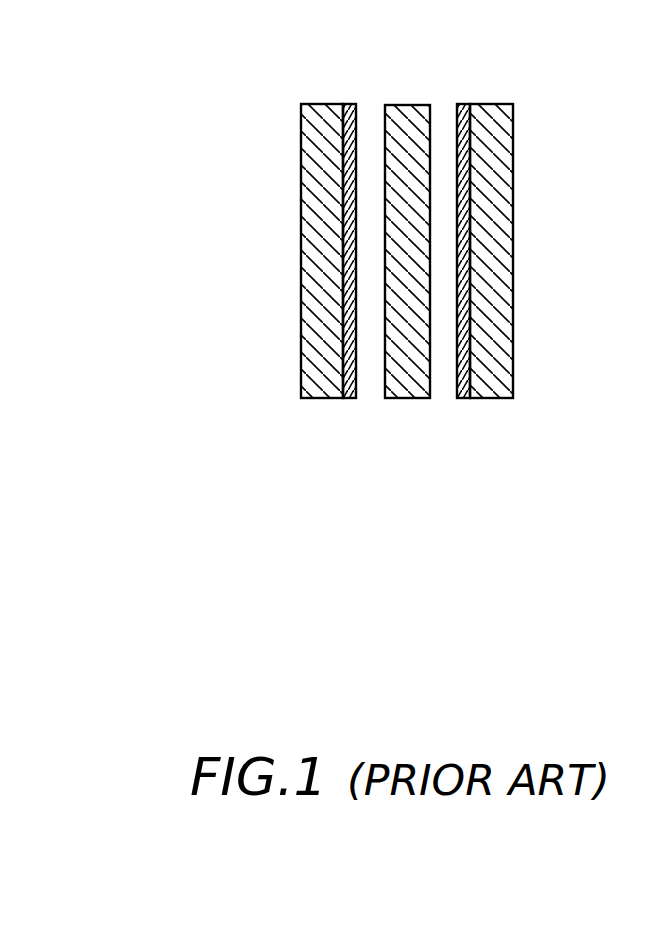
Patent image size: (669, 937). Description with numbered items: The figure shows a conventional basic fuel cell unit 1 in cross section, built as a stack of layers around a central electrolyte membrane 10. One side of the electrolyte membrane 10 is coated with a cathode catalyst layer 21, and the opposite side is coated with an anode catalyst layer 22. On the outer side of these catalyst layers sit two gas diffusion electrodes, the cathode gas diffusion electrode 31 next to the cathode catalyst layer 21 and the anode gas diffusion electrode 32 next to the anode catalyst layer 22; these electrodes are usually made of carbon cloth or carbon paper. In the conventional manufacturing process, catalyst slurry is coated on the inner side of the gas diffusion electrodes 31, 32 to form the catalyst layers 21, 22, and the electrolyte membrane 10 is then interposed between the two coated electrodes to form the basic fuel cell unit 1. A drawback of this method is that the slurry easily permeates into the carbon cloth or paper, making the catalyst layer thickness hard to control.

The basic fuel cell unit 1 is at (303, 73).
The electrolyte membrane 10 is at (403, 398).
The cathode catalyst layer 21 is at (343, 398).
The anode catalyst layer 22 is at (460, 398).
The cathode gas diffusion electrode 31 is at (312, 398).
The anode gas diffusion electrode 32 is at (490, 398).